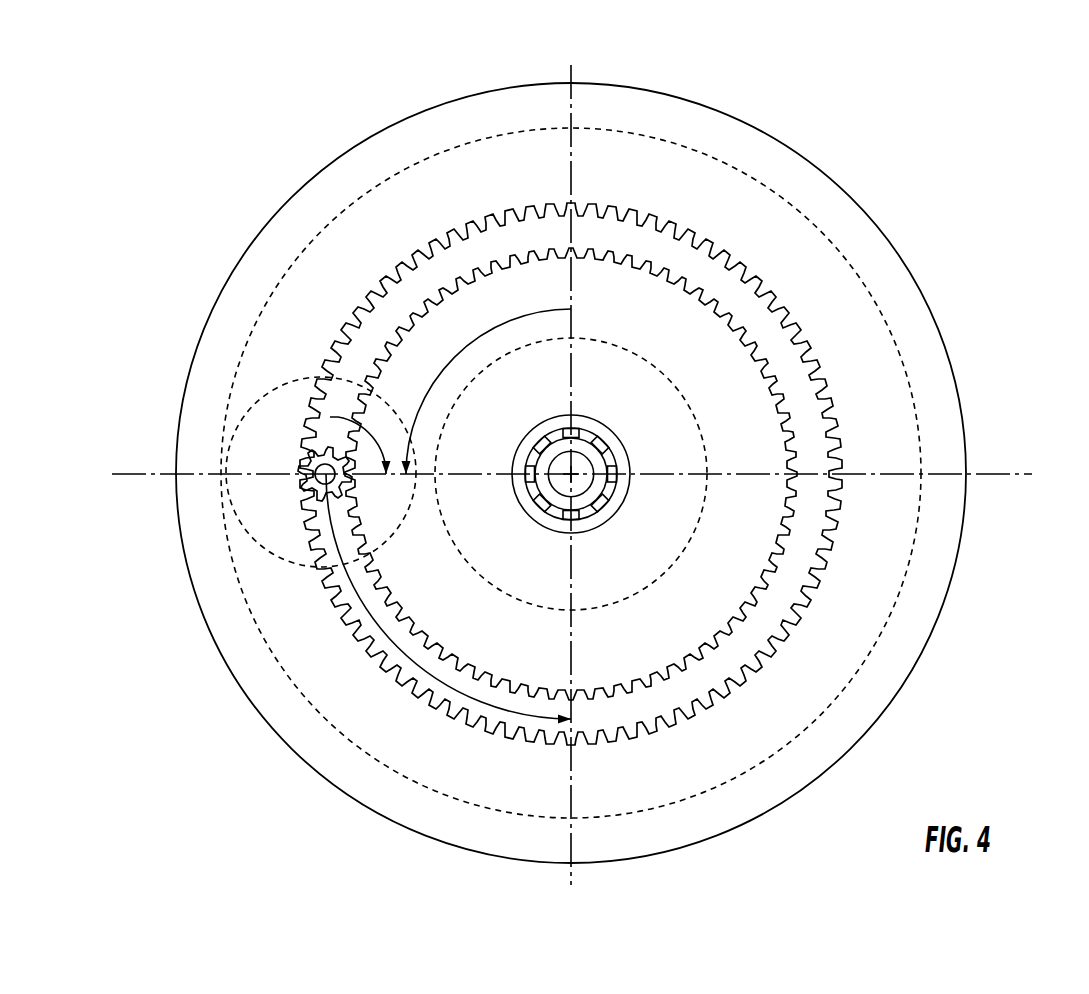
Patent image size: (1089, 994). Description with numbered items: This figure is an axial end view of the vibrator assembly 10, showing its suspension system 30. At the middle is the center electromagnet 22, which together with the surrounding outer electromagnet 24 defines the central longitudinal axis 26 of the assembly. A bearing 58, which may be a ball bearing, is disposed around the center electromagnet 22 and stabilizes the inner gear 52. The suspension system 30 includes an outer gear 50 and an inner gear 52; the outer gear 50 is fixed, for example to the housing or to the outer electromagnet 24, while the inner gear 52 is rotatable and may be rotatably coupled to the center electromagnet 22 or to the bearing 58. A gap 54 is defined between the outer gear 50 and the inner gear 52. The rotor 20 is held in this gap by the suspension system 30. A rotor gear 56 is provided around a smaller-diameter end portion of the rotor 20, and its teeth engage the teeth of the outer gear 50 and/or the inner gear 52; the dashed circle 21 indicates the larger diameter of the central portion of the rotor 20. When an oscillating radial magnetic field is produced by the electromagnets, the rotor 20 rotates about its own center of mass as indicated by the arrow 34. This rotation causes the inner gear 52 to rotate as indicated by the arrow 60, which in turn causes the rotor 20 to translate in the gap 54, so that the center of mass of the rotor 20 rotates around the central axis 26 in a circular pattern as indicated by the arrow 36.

The vibrator assembly 10 is at (972, 135).
The rotor 20 is at (304, 491).
The dashed circle 21 is at (236, 428).
The center electromagnet 22 is at (592, 489).
The outer electromagnet 24 is at (902, 258).
The central longitudinal axis 26 is at (575, 472).
The suspension system 30 is at (788, 178).
The arrow 34 is at (338, 418).
The arrow 36 is at (455, 690).
The outer gear 50 is at (676, 474).
The inner gear 52 is at (750, 390).
The gap 54 is at (812, 400).
The rotor gear 56 is at (310, 427).
The bearing 58 is at (630, 495).
The arrow 60 is at (512, 316).